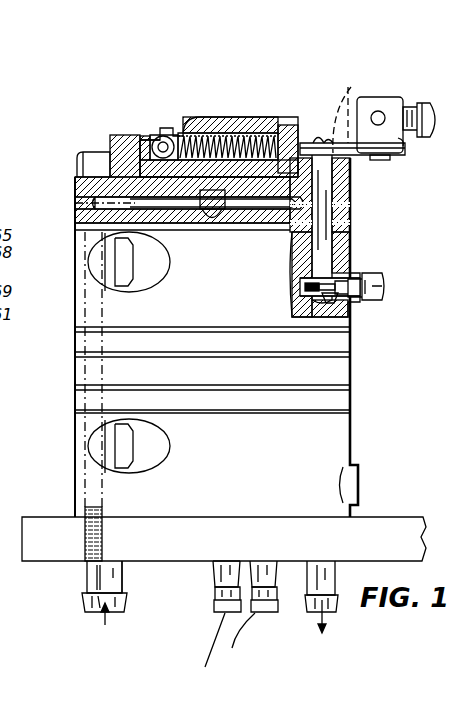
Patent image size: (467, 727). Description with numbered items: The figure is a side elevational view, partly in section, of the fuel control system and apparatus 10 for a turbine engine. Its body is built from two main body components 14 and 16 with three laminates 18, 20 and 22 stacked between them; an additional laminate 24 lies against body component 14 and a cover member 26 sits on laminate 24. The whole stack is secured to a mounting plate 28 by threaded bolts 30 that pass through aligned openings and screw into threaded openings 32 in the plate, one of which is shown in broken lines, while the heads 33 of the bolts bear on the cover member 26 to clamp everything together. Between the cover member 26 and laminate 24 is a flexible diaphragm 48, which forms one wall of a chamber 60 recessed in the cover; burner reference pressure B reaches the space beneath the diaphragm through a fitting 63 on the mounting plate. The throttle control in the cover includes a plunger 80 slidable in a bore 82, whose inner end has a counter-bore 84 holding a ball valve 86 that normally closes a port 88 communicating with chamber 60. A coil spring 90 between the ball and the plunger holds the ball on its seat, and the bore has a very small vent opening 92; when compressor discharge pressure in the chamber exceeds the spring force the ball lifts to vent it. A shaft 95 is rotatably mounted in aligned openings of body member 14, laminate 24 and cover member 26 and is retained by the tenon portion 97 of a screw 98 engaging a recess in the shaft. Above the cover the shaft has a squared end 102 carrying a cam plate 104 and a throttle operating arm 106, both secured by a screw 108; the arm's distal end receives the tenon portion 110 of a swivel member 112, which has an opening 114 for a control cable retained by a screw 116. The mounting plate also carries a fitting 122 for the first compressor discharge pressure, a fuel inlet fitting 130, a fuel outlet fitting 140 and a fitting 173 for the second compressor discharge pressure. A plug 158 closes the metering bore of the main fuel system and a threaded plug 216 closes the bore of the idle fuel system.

The fuel control system and apparatus 10 is at (357, 346).
The main body component 14 is at (323, 243).
The main body component 16 is at (75, 472).
The laminate 18 is at (75, 340).
The laminate 20 is at (75, 368).
The laminate 22 is at (75, 395).
The laminate 24 is at (83, 207).
The cover member 26 is at (110, 140).
The mounting plate 28 is at (415, 517).
The threaded bolt 30 is at (95, 315).
The threaded opening 32 is at (88, 533).
The bolt head 33 is at (88, 152).
The flexible diaphragm 48 is at (288, 207).
The chamber 60 is at (170, 193).
The fitting 63 is at (90, 590).
The plunger 80 is at (293, 127).
The bore 82 is at (207, 125).
The counter-bore 84 is at (190, 127).
The ball valve 86 is at (150, 140).
The port 88 is at (138, 148).
The coil spring 90 is at (214, 128).
The vent opening 92 is at (170, 125).
The shaft 95 is at (343, 242).
The tenon portion 97 is at (318, 300).
The screw 98 is at (367, 277).
The squared end 102 is at (346, 106).
The cam plate 104 is at (350, 162).
The throttle operating arm 106 is at (403, 143).
The screw 108 is at (330, 133).
The tenon portion 110 is at (380, 160).
The swivel member 112 is at (397, 107).
The opening 114 is at (380, 112).
The screw 116 is at (440, 118).
The fitting 122 is at (215, 590).
The fitting 130 is at (124, 572).
The fuel outlet fitting 140 is at (338, 608).
The plug 158 is at (98, 253).
The fitting 173 is at (277, 568).
The threaded plug 216 is at (97, 438).
The burner reference pressure B is at (85, 606).